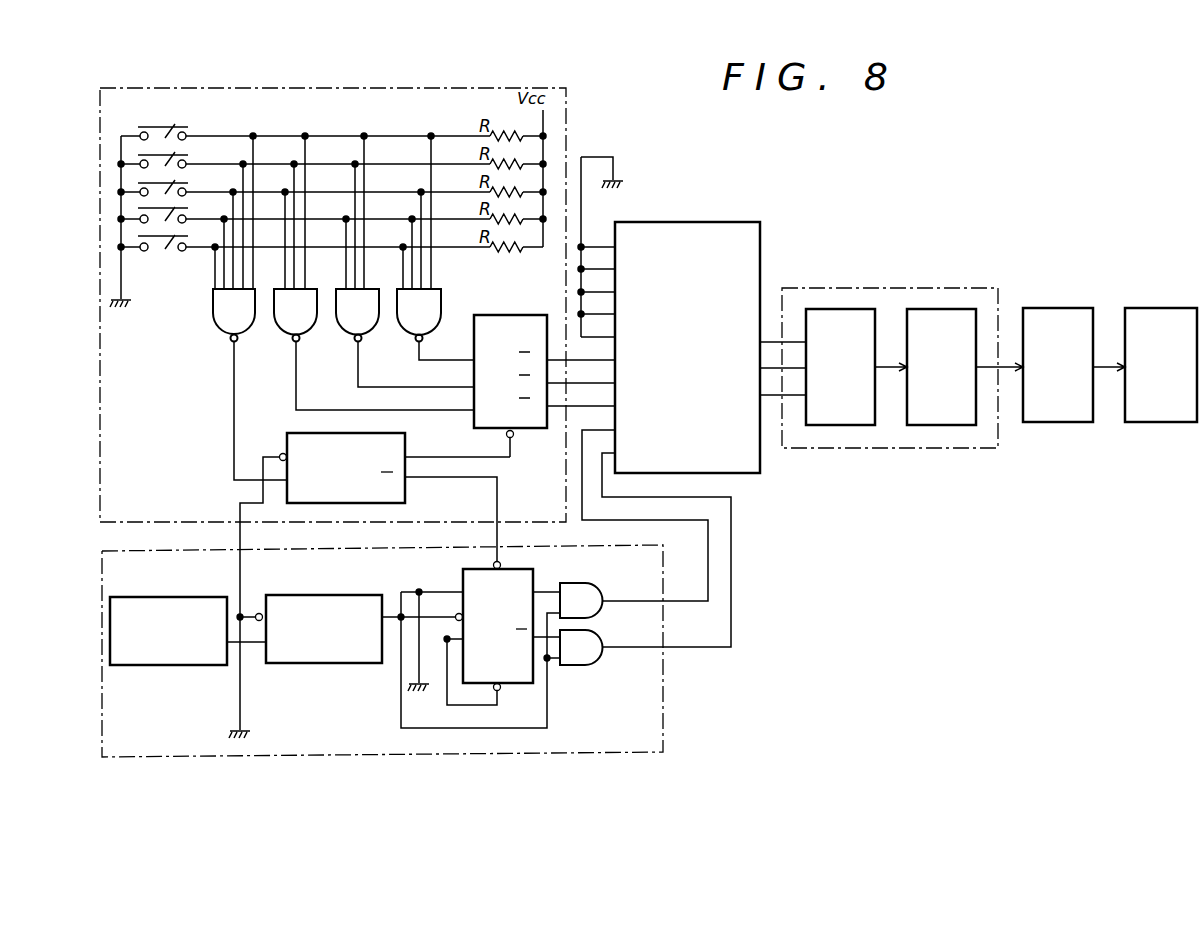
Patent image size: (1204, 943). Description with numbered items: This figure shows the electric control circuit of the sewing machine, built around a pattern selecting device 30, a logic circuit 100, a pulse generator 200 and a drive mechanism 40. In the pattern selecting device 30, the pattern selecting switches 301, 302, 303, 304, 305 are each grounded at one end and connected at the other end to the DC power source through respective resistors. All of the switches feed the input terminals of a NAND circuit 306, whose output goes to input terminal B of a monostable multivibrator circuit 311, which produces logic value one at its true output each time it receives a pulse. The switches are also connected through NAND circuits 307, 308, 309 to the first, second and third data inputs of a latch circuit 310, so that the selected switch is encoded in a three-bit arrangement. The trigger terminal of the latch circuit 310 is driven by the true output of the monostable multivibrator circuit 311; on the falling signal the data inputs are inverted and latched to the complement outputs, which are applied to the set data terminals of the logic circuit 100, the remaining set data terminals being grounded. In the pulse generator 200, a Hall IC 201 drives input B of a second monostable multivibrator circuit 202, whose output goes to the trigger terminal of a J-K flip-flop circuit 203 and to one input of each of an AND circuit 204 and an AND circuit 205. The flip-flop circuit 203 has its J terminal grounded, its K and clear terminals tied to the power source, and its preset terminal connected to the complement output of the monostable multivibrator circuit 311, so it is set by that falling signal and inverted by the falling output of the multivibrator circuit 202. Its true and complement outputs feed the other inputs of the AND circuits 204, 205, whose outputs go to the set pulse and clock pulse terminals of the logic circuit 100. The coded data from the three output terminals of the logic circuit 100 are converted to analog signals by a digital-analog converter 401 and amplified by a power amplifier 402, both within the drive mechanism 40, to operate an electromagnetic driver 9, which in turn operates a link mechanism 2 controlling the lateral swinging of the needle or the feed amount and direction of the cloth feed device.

The pattern selecting device 30 is at (566, 115).
The pattern selecting switch 301 is at (172, 127).
The pattern selecting switch 302 is at (172, 156).
The pattern selecting switch 303 is at (172, 184).
The pattern selecting switch 304 is at (167, 217).
The pattern selecting switch 305 is at (161, 244).
The NAND circuit 306 is at (243, 332).
The NAND circuit 307 is at (305, 332).
The NAND circuit 308 is at (367, 332).
The NAND circuit 309 is at (441, 303).
The latch circuit 310 is at (516, 314).
The monostable multivibrator circuit 311 is at (290, 433).
The logic circuit 100 is at (718, 299).
The drive mechanism 40 is at (912, 287).
The digital-analog converter 401 is at (836, 309).
The power amplifier 402 is at (958, 309).
The electromagnetic driver 9 is at (1060, 308).
The link mechanism 2 is at (1152, 308).
The pulse generator 200 is at (663, 708).
The Hall IC 201 is at (167, 665).
The monostable multivibrator circuit 202 is at (328, 663).
The J-K flip-flop circuit 203 is at (525, 683).
The AND circuit 204 is at (600, 590).
The AND circuit 205 is at (600, 637).